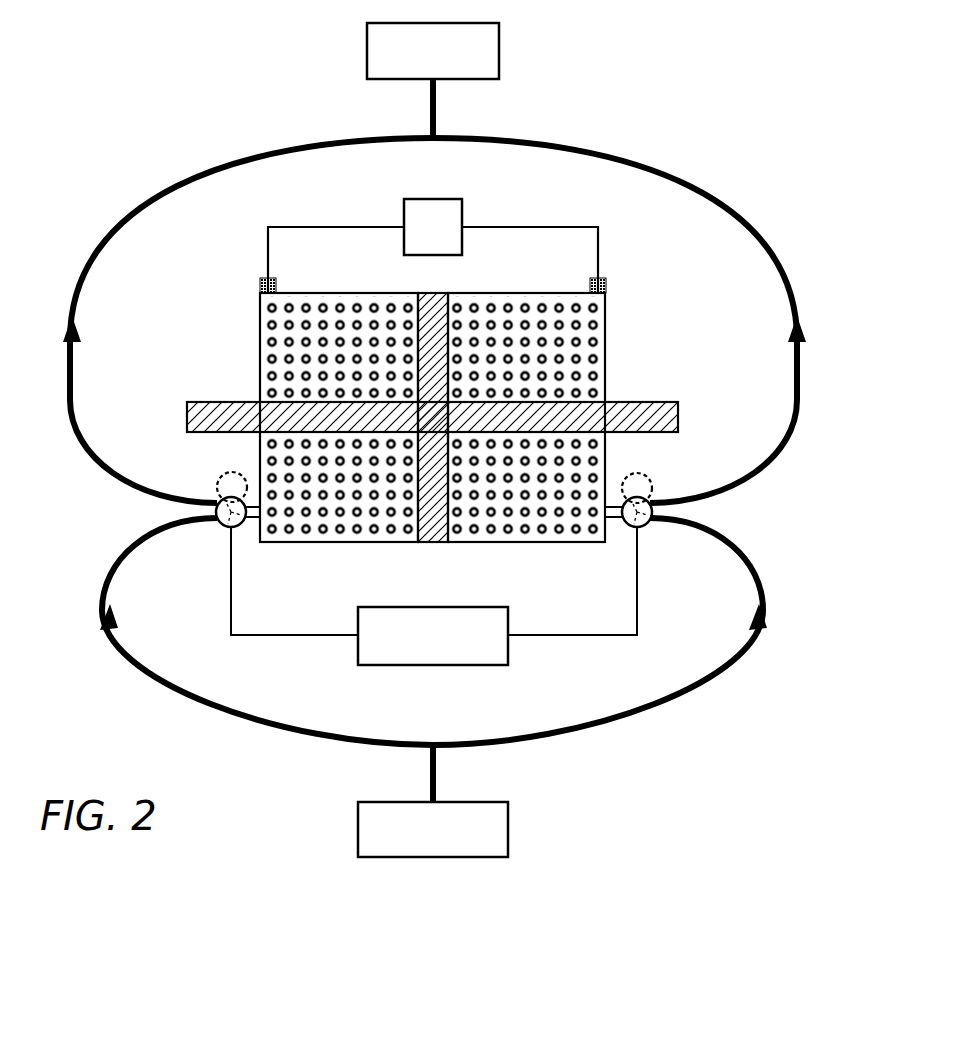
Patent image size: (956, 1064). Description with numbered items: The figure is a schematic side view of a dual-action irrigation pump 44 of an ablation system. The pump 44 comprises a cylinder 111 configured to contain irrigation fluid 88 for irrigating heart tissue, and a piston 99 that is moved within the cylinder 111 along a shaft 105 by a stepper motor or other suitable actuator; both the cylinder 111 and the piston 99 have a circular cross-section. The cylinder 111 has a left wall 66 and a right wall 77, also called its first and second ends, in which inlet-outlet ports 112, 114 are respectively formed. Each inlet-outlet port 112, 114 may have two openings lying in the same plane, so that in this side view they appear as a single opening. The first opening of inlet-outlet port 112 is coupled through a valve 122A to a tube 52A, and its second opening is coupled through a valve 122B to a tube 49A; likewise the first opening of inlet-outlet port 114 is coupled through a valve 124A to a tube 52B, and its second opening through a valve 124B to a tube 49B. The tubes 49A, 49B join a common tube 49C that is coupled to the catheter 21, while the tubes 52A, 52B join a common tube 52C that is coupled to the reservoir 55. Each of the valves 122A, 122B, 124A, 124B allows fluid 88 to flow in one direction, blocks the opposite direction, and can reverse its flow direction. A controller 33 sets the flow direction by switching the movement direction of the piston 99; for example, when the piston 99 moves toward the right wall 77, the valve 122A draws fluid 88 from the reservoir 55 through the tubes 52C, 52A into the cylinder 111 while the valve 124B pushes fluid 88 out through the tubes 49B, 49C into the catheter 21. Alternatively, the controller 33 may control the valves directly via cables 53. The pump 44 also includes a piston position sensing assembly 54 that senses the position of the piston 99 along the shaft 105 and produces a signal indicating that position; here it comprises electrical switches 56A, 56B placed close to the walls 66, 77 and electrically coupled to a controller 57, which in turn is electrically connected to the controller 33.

The catheter 21 is at (499, 44).
The common tube 49C is at (436, 98).
The tube 49A is at (158, 193).
The tube 49B is at (703, 193).
The pump 44 is at (730, 322).
The piston position sensing assembly 54 is at (242, 229).
The controller 57 is at (433, 227).
The electrical switch 56A is at (259, 290).
The electrical switch 56B is at (607, 283).
The left wall 66 is at (259, 330).
The irrigation fluid 88 is at (565, 334).
The right wall 77 is at (607, 376).
The piston 99 is at (433, 291).
The cylinder 111 is at (402, 291).
The shaft 105 is at (187, 414).
The valve 122A is at (222, 529).
The valve 122B is at (217, 494).
The valve 124A is at (645, 529).
The valve 124B is at (652, 494).
The inlet-outlet port 112 is at (138, 514).
The inlet-outlet port 114 is at (712, 514).
The cables 53 is at (286, 635).
The controller 33 is at (433, 606).
The tube 52A is at (310, 750).
The tube 52B is at (665, 727).
The common tube 52C is at (436, 768).
The reservoir 55 is at (433, 857).